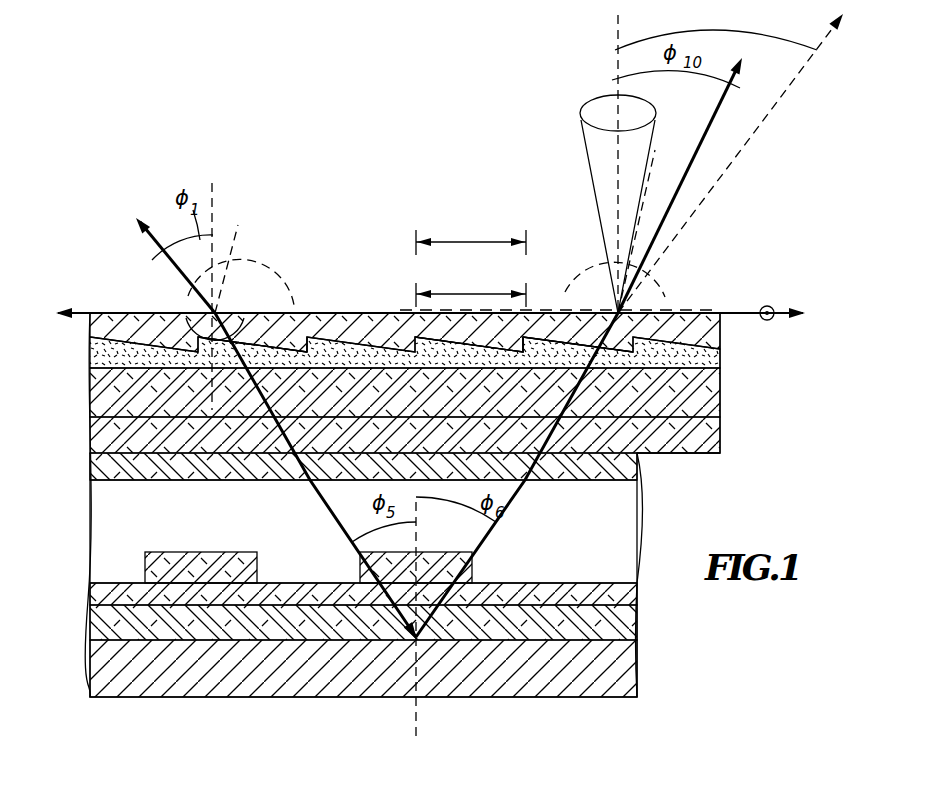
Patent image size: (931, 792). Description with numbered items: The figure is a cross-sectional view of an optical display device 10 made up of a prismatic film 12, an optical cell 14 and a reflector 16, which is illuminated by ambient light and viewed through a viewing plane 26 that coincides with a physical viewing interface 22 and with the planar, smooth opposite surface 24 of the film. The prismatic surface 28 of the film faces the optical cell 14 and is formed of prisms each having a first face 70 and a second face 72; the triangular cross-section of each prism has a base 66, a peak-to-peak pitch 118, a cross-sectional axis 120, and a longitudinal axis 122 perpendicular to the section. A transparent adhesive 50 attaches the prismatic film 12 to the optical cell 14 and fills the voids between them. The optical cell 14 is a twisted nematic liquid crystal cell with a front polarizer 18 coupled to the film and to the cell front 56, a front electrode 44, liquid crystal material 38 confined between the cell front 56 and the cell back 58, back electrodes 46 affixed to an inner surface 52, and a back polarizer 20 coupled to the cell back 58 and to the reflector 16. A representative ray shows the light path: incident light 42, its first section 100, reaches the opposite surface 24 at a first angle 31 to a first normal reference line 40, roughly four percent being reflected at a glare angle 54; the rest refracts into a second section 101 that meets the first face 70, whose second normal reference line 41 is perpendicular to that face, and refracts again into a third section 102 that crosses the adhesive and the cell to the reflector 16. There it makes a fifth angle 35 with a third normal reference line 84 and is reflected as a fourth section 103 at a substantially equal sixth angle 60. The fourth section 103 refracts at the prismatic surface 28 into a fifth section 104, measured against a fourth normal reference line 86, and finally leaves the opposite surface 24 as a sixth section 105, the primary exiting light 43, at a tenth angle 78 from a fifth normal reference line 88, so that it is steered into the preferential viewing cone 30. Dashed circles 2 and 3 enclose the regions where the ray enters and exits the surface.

The exit refraction region 2 is at (262, 268).
The entry refraction region 3 is at (585, 268).
The optical display device 10 is at (291, 213).
The prismatic film 12 is at (366, 313).
The optical cell 14 is at (90, 400).
The reflector 16 is at (625, 665).
The front polarizer 18 is at (90, 380).
The back polarizer 20 is at (90, 635).
The physical viewing interface 22 is at (132, 313).
The opposite surface 24 is at (315, 313).
The viewing plane 26 is at (358, 313).
The prismatic surface 28 is at (90, 348).
The preferential viewing cone 30 is at (582, 142).
The first angle 31 is at (195, 245).
The fifth angle 35 is at (362, 540).
The liquid crystal material 38 is at (220, 515).
The first normal reference line 40 is at (213, 200).
The second normal reference line 41 is at (235, 245).
The incident light 42 is at (140, 228).
The primary exiting light 43 is at (690, 165).
The front electrode 44 is at (130, 476).
The back electrode 46 is at (245, 552).
The transparent adhesive 50 is at (398, 325).
The inner surface 52 is at (655, 457).
The glare angle 54 is at (706, 30).
The cell front 56 is at (722, 446).
The cell back 58 is at (113, 597).
The sixth angle 60 is at (470, 505).
The base 66 is at (472, 294).
The first face 70 is at (467, 350).
The second face 72 is at (545, 325).
The tenth angle 78 is at (702, 76).
The third normal reference line 84 is at (418, 716).
The fourth normal reference line 86 is at (638, 226).
The fifth normal reference line 88 is at (614, 36).
The first section 100 is at (146, 212).
The second section 101 is at (185, 322).
The third section 102 is at (318, 490).
The fourth section 103 is at (512, 494).
The fifth section 104 is at (660, 305).
The sixth section 105 is at (696, 153).
The pitch 118 is at (470, 242).
The cross-sectional axis 120 is at (66, 310).
The longitudinal axis 122 is at (770, 306).